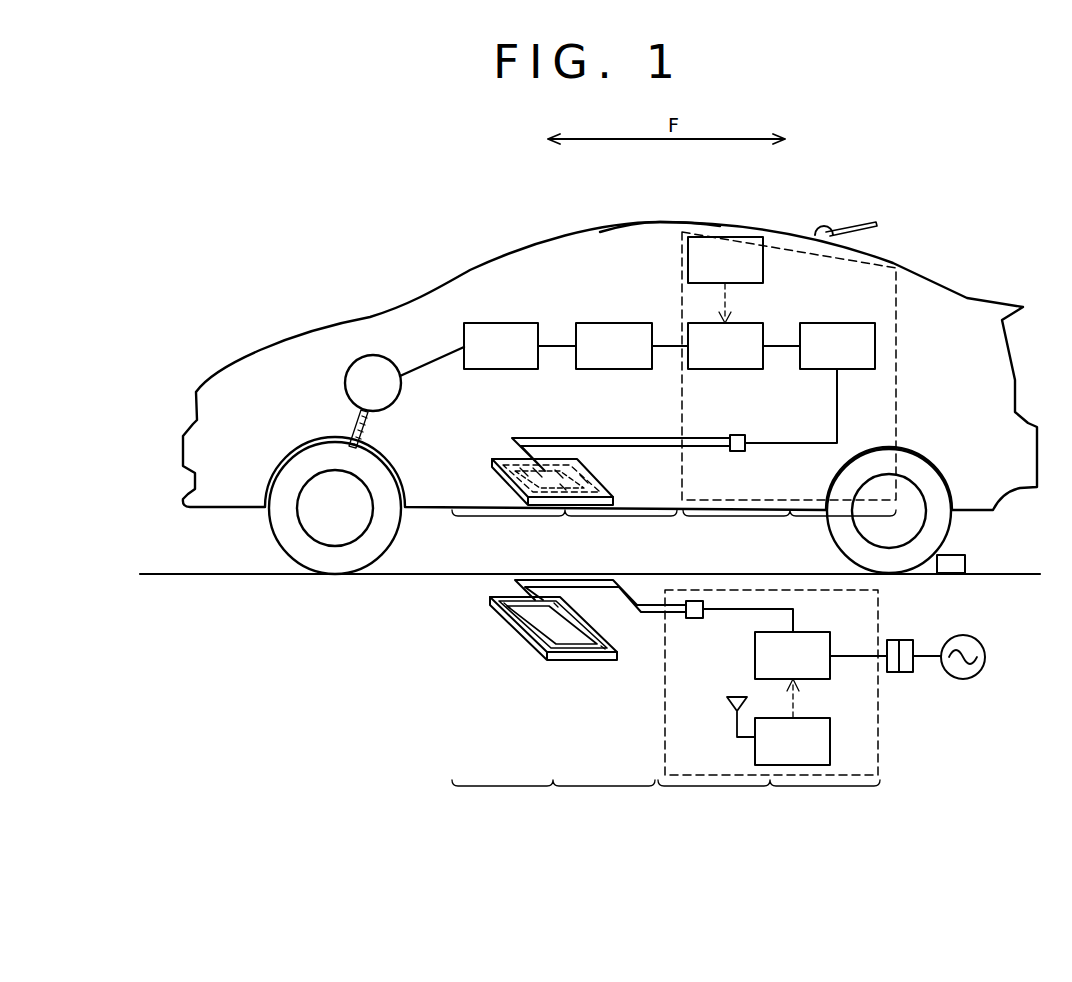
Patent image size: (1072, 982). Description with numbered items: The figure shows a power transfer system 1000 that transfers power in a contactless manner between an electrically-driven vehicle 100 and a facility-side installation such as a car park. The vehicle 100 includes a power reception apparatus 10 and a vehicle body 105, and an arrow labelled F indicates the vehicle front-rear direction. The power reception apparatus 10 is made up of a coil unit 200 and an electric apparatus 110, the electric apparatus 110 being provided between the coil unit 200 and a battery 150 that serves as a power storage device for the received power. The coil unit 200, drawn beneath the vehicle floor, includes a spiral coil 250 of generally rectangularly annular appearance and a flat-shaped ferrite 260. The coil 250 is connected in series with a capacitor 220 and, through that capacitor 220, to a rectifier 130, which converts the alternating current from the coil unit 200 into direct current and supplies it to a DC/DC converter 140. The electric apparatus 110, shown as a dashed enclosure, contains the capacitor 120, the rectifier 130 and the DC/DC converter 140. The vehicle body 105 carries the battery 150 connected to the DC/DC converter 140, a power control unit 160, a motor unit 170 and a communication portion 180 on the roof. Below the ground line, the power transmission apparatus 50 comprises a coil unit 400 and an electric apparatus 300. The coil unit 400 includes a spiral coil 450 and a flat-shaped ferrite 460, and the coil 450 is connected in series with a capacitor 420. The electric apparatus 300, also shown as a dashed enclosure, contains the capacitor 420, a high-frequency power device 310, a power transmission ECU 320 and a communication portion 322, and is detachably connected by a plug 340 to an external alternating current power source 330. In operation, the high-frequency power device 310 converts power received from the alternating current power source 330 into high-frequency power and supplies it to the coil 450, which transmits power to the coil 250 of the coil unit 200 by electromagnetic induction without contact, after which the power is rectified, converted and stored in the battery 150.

The power transfer system 1000 is at (593, 514).
The electrically-driven vehicle 100 is at (413, 272).
The vehicle body 105 is at (655, 222).
The power reception apparatus 10 is at (620, 373).
The power transmission apparatus 50 is at (735, 720).
The electric apparatus 110 is at (789, 391).
The capacitor 120 is at (764, 261).
The rectifier 130 is at (853, 322).
The DC/DC converter 140 is at (733, 322).
The battery 150 is at (603, 322).
The power control unit 160 is at (494, 322).
The motor unit 170 is at (388, 357).
The communication portion 180 is at (856, 223).
The coil unit 200 is at (610, 474).
The capacitor 220 is at (744, 434).
The coil 250 is at (500, 458).
The flat-shaped ferrite 260 is at (510, 484).
The electric apparatus 300 is at (769, 706).
The high-frequency power device 310 is at (811, 632).
The power transmission ECU 320 is at (811, 718).
The communication portion 322 is at (728, 701).
The external alternating current power source 330 is at (978, 644).
The plug 340 is at (906, 673).
The coil unit 400 is at (555, 701).
The capacitor 420 is at (694, 619).
The coil 450 is at (570, 650).
The flat-shaped ferrite 460 is at (507, 621).